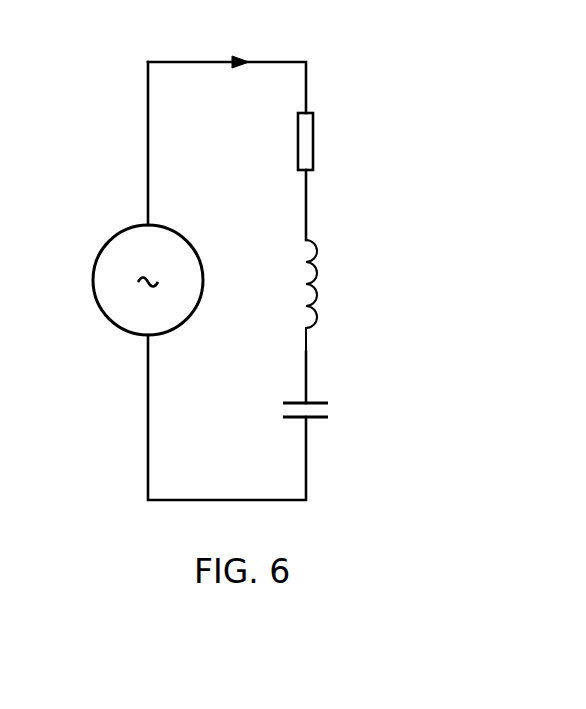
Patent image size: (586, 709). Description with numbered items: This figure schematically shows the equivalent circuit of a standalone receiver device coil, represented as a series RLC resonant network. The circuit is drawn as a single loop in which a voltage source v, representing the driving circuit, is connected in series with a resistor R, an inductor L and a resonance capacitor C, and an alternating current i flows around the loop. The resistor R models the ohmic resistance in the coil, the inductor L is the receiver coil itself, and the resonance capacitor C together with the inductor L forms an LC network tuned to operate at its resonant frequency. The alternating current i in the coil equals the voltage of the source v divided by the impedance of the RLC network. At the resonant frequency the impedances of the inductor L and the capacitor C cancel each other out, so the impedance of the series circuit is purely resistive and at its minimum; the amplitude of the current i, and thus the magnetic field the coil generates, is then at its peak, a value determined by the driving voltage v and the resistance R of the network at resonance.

The alternating current i is at (238, 44).
The voltage source v is at (129, 280).
The resistor R is at (365, 141).
The inductor L is at (368, 296).
The resonance capacitor C is at (358, 413).